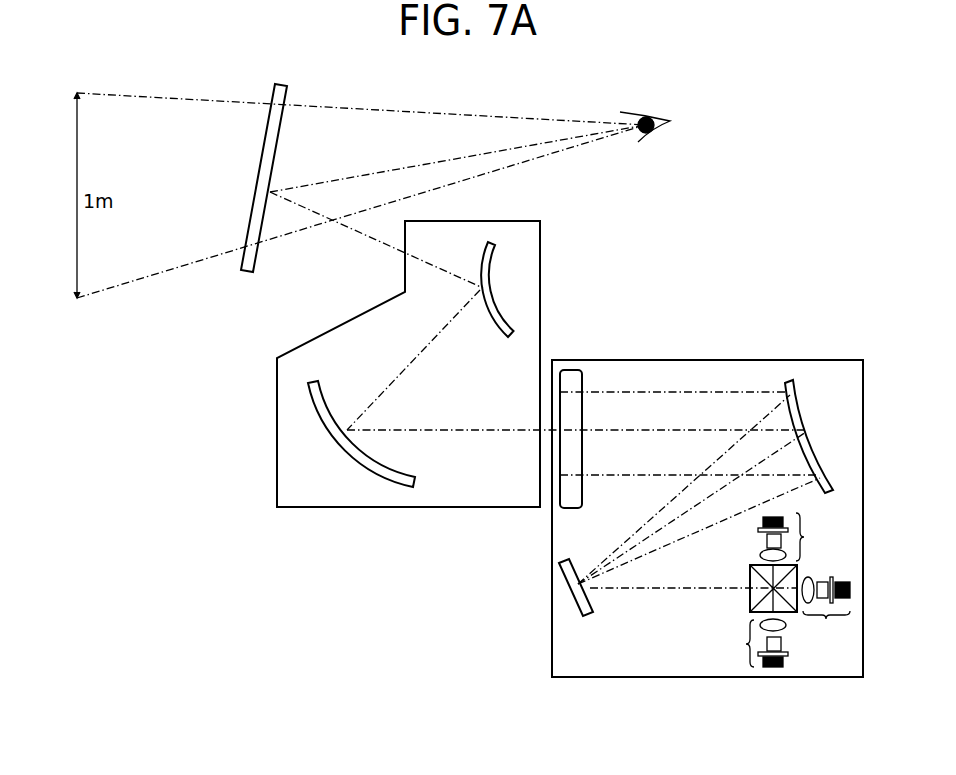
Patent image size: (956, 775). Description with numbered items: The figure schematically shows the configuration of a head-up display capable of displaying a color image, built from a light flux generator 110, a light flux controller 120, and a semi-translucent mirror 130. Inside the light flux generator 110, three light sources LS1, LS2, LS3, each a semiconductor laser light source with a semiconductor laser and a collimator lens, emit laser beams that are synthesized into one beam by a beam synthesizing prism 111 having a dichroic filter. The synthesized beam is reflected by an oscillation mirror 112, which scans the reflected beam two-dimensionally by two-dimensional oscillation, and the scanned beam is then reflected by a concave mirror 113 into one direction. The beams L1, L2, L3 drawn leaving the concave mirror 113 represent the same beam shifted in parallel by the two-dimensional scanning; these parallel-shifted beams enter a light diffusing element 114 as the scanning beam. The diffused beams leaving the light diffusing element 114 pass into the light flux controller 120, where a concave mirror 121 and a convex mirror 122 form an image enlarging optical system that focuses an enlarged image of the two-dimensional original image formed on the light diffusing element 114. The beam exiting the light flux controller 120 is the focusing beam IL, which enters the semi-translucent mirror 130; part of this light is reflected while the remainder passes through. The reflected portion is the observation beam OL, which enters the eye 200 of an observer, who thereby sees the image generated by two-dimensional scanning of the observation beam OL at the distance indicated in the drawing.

The light flux generator 110 is at (754, 359).
The beam synthesizing prism 111 is at (750, 570).
The oscillation mirror 112 is at (592, 614).
The concave mirror 113 is at (803, 401).
The light diffusing element 114 is at (575, 509).
The light flux controller 120 is at (540, 263).
The concave mirror 121 is at (420, 480).
The convex mirror 122 is at (493, 331).
The semi-translucent mirror 130 is at (278, 89).
The eye 200 is at (651, 115).
The light source LS1 is at (746, 643).
The light source LS2 is at (826, 613).
The light source LS3 is at (801, 537).
The beam L1 is at (680, 392).
The beam L2 is at (651, 430).
The beam L3 is at (622, 475).
The observation beam OL is at (385, 171).
The focusing beam IL is at (366, 238).